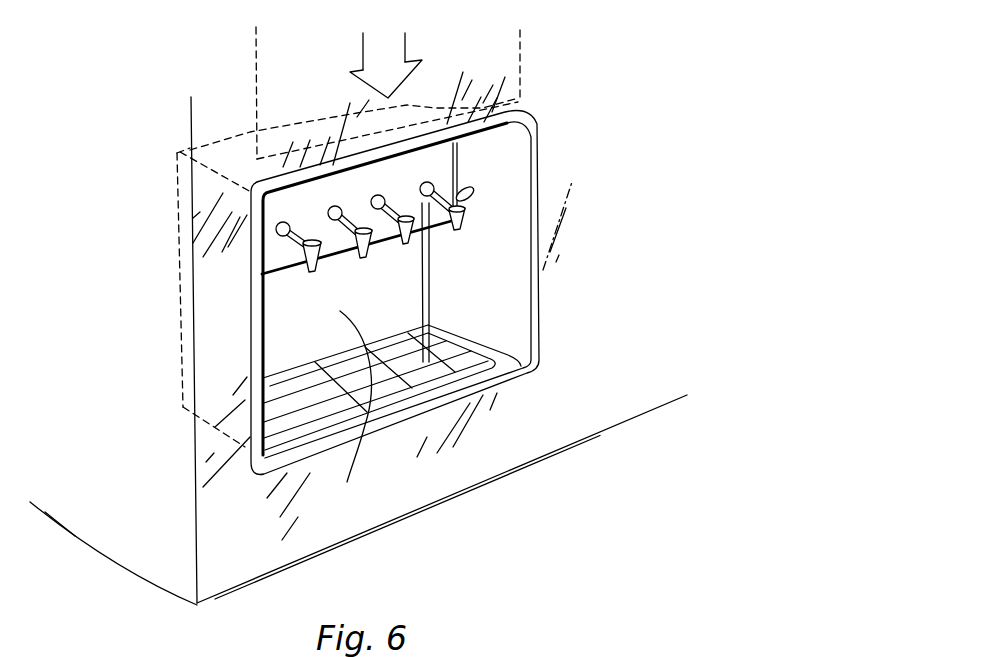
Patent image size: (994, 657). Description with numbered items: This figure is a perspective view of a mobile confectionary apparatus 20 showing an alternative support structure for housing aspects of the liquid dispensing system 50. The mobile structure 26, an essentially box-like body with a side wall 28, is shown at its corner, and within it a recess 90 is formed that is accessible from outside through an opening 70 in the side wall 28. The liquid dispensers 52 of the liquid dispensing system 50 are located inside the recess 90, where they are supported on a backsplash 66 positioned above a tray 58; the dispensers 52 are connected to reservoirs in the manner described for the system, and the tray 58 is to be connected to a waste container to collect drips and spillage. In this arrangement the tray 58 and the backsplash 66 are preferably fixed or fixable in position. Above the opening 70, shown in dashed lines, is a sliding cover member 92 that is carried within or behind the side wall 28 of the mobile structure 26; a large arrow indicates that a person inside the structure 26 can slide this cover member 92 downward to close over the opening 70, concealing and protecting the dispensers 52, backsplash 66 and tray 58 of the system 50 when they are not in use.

The mobile confectionary apparatus 20 is at (135, 171).
The mobile structure 26 is at (137, 575).
The side wall 28 is at (238, 557).
The liquid dispensing system 50 is at (458, 162).
The liquid dispensers 52 is at (300, 243).
The tray 58 is at (500, 348).
The backsplash 66 is at (350, 412).
The opening 70 is at (532, 120).
The recess 90 is at (513, 272).
The sliding cover member 92 is at (519, 50).